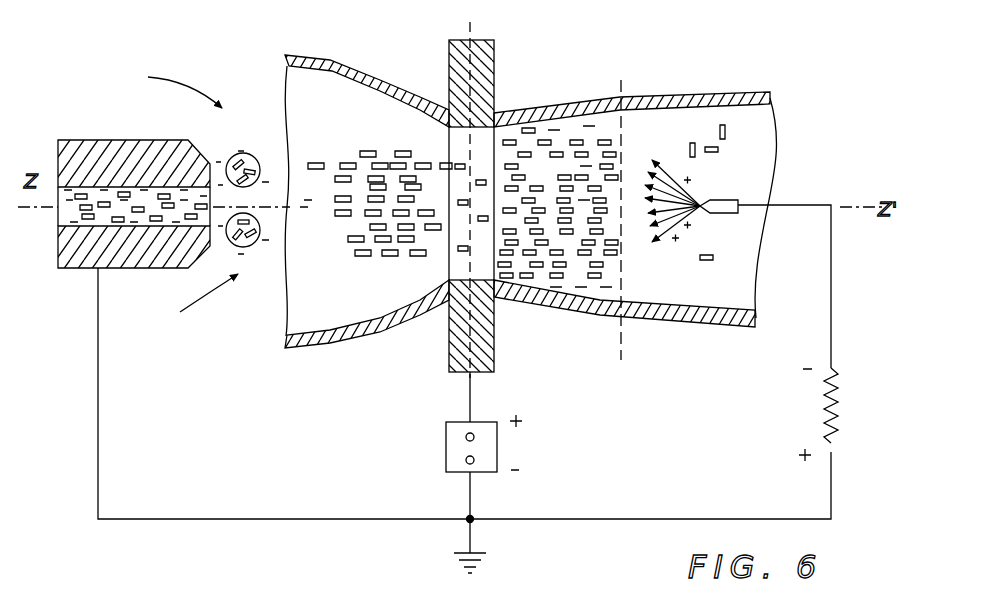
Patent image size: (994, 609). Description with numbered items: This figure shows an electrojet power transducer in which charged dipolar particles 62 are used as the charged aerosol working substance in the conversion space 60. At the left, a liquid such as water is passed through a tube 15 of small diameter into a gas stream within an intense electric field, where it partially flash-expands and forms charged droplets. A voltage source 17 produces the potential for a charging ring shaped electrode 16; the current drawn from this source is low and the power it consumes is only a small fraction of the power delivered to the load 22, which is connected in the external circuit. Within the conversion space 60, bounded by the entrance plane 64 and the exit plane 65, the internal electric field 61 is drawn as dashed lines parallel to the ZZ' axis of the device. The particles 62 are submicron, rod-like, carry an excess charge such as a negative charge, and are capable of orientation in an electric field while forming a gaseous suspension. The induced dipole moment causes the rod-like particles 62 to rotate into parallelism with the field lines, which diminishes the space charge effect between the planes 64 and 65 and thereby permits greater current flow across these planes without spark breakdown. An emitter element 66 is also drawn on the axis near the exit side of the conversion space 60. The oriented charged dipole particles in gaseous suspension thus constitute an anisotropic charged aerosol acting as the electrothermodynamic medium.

The tube 15 is at (116, 120).
The charged dipolar particles 62 is at (68, 205).
The entrance plane 64 is at (470, 28).
The charging ring shaped electrode 16 is at (495, 58).
The exit plane 65 is at (621, 84).
The conversion space 60 is at (532, 186).
The internal electric field 61 is at (600, 262).
The electron emitter 66 is at (736, 200).
The voltage source 17 is at (448, 464).
The load 22 is at (836, 426).